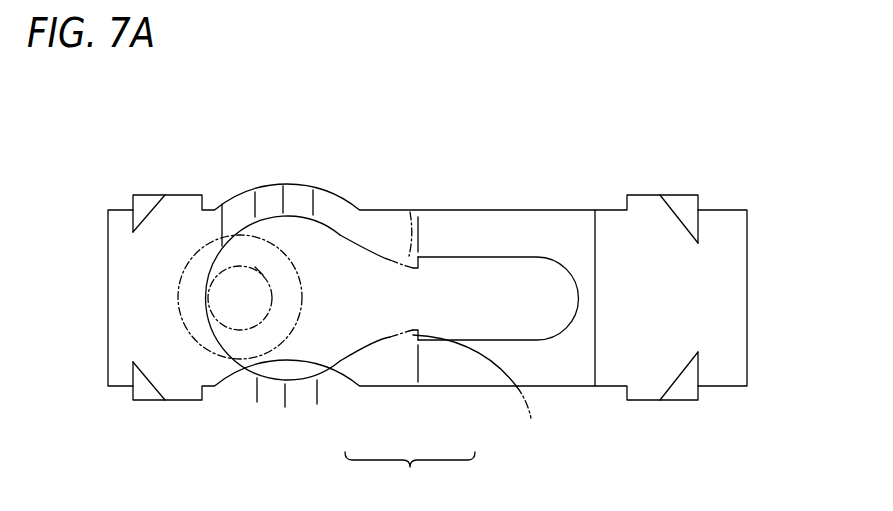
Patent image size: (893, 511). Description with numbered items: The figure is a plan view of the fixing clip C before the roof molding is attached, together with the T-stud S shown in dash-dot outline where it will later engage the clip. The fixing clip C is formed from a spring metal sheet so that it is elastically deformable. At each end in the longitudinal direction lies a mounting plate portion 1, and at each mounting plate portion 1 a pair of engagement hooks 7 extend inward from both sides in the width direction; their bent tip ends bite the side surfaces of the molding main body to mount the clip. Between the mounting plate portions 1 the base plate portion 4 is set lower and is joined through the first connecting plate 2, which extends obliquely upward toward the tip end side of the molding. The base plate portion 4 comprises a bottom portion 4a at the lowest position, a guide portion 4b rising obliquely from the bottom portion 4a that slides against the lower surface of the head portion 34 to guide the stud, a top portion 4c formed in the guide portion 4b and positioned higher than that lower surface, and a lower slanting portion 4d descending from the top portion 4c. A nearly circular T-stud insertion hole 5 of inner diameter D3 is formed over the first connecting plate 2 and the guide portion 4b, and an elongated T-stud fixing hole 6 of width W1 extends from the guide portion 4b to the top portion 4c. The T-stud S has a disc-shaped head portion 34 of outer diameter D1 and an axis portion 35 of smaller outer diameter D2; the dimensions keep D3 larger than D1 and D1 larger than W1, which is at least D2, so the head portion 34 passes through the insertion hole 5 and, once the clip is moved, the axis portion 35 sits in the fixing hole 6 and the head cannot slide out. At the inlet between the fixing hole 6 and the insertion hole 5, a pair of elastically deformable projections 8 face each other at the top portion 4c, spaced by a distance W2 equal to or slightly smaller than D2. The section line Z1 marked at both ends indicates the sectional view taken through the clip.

The fixing clip C is at (555, 158).
The mounting plate portion 1 is at (118, 362).
The first connecting plate 2 is at (273, 402).
The base plate portion 4 is at (410, 475).
The bottom portion 4a is at (302, 403).
The guide portion 4b is at (379, 378).
The top portion 4c is at (421, 368).
The lower slanting portion 4d is at (490, 377).
The T-stud insertion hole 5 is at (334, 262).
The T-stud fixing hole 6 is at (483, 262).
The engagement hook 7 is at (179, 196).
The elastically-deformable projection 8 is at (410, 212).
The head portion 34 is at (222, 204).
The axis portion 35 is at (263, 275).
The T-stud S is at (240, 222).
The outer diameter of the head portion D1 is at (272, 225).
The outer diameter of the axis portion D2 is at (290, 315).
The inner diameter of the T-stud insertion hole D3 is at (277, 375).
The width of the T-stud fixing hole W1 is at (520, 258).
The distance between the projections W2 is at (423, 268).
The section line Z1 is at (99, 297).